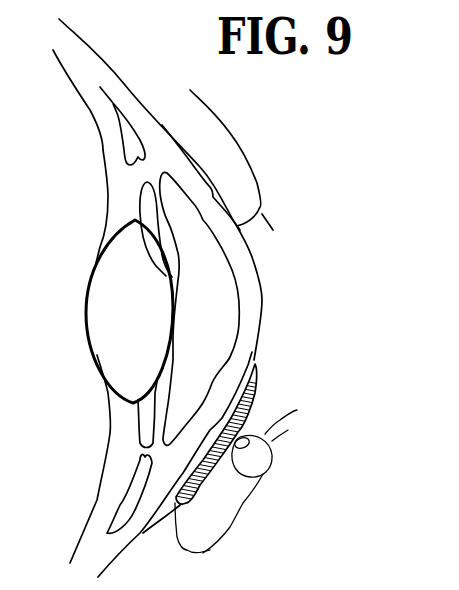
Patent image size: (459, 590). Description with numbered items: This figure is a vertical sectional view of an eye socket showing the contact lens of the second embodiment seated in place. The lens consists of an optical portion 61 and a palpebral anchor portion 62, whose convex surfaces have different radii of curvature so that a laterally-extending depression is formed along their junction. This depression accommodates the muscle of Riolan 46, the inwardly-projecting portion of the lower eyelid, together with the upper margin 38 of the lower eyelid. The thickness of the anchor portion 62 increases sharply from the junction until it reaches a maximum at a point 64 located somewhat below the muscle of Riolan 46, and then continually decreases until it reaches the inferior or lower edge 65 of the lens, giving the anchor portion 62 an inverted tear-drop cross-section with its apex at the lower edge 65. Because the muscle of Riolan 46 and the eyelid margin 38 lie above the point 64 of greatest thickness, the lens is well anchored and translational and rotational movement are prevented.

The upper margin of the lower eyelid 38 is at (297, 410).
The muscle of Riolan 46 is at (255, 437).
The optical portion 61 is at (258, 388).
The palpebral anchor portion 62 is at (215, 473).
The point of maximum thickness 64 is at (262, 471).
The inferior or lower edge 65 is at (173, 575).